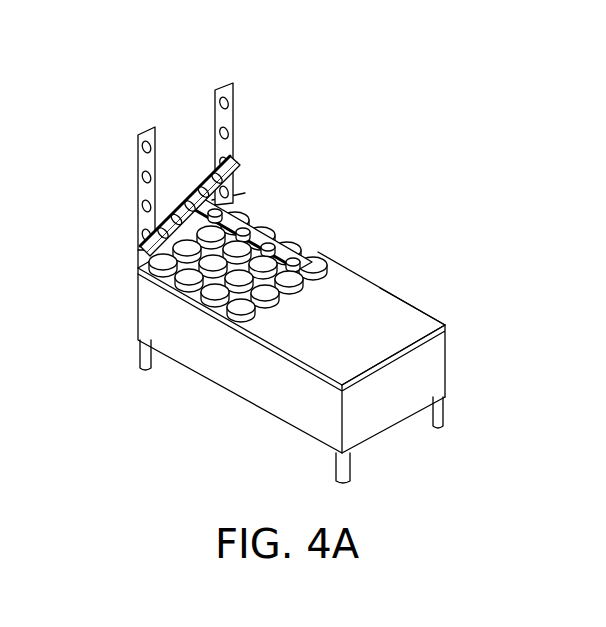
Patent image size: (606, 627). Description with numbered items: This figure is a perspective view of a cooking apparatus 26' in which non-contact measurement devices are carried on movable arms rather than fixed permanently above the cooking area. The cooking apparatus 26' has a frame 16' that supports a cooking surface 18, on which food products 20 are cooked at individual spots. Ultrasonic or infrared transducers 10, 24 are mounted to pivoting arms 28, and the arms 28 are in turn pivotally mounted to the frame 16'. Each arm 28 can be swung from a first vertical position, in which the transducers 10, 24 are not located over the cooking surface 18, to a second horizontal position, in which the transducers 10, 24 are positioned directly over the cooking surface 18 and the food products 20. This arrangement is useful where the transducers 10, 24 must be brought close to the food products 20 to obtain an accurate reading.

The pivoting arm 28 is at (170, 168).
The ultrasonic or infrared transducer 10 is at (96, 188).
The ultrasonic or infrared transducer 24 is at (274, 202).
The food product 20 is at (256, 250).
The cooking surface 18 is at (382, 293).
The frame 16' is at (261, 366).
The cooking apparatus 26' is at (52, 223).